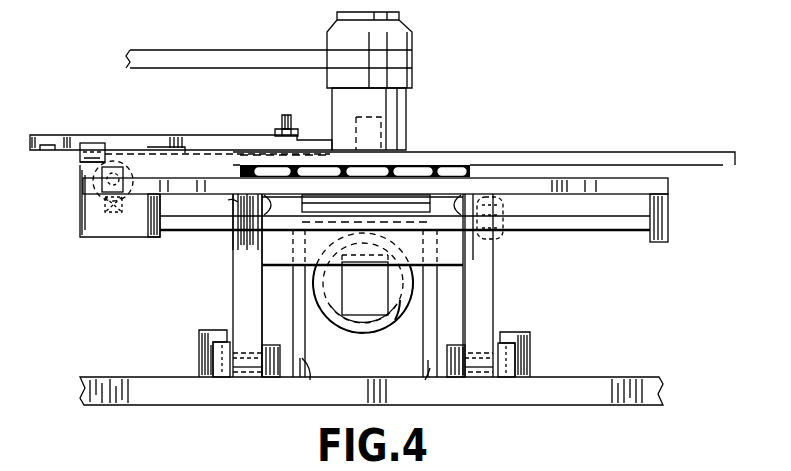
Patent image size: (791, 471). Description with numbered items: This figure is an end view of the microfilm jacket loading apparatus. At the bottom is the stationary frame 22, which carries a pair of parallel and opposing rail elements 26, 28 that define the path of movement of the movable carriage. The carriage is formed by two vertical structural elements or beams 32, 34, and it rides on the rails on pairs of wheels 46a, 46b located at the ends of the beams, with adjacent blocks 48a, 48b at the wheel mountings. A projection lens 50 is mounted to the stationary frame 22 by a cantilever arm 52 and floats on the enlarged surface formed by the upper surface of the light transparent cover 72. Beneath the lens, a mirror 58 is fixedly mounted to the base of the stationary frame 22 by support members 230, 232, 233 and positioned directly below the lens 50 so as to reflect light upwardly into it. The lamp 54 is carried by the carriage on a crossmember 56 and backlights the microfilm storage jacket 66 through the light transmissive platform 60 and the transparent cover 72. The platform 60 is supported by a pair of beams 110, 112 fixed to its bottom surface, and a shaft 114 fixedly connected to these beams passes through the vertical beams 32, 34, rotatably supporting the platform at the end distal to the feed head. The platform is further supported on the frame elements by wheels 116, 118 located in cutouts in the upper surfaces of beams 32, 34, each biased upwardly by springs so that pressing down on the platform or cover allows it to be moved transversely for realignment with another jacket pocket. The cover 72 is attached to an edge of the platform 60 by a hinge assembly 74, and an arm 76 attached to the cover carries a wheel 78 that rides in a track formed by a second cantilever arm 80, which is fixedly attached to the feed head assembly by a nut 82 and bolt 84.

The stationary frame 22 is at (152, 375).
The rail element 26 is at (200, 357).
The rail element 28 is at (532, 342).
The vertical structural element 32 is at (236, 300).
The vertical structural element 34 is at (488, 295).
The pair of wheels 46a is at (205, 377).
The pair of wheels 46b is at (508, 377).
The left spacer block 48a is at (250, 377).
The right spacer block 48b is at (472, 377).
The projection lens 50 is at (407, 43).
The cantilever arm 52 is at (276, 57).
The lamp 54 is at (385, 332).
The crossmember 56 is at (450, 257).
The mirror 58 is at (320, 332).
The platform 60 is at (658, 190).
The microfilm storage jacket 66 is at (452, 165).
The light transparent cover 72 is at (625, 157).
The hinge assembly 74 is at (90, 225).
The arm 76 is at (95, 147).
The wheel 78 is at (82, 158).
The second cantilever arm 80 is at (183, 150).
The nut 82 is at (296, 128).
The bolt 84 is at (284, 115).
The beam 110 is at (155, 232).
The beam 112 is at (662, 228).
The shaft 114 is at (582, 228).
The wheel 116 is at (228, 200).
The wheel 118 is at (502, 232).
The support member 230 is at (377, 375).
The support member 232 is at (310, 377).
The support member 233 is at (425, 377).